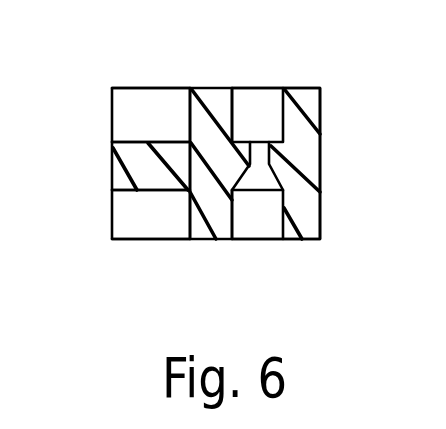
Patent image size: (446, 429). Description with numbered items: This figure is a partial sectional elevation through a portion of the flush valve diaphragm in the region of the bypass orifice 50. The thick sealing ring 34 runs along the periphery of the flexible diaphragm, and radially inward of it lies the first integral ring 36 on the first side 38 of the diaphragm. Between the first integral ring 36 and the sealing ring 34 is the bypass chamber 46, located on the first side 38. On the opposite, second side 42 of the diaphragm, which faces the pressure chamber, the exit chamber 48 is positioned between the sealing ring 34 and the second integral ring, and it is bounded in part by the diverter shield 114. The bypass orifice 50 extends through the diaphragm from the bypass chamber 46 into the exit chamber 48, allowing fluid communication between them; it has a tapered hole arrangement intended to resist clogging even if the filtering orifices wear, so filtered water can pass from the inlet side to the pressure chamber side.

The sealing ring 34 is at (320, 240).
The first integral ring 36 is at (210, 240).
The first side 38 is at (157, 190).
The second side 42 is at (160, 140).
The bypass chamber 46 is at (272, 223).
The exit chamber 48 is at (265, 99).
The bypass orifice 50 is at (270, 179).
The diverter shield 114 is at (222, 98).